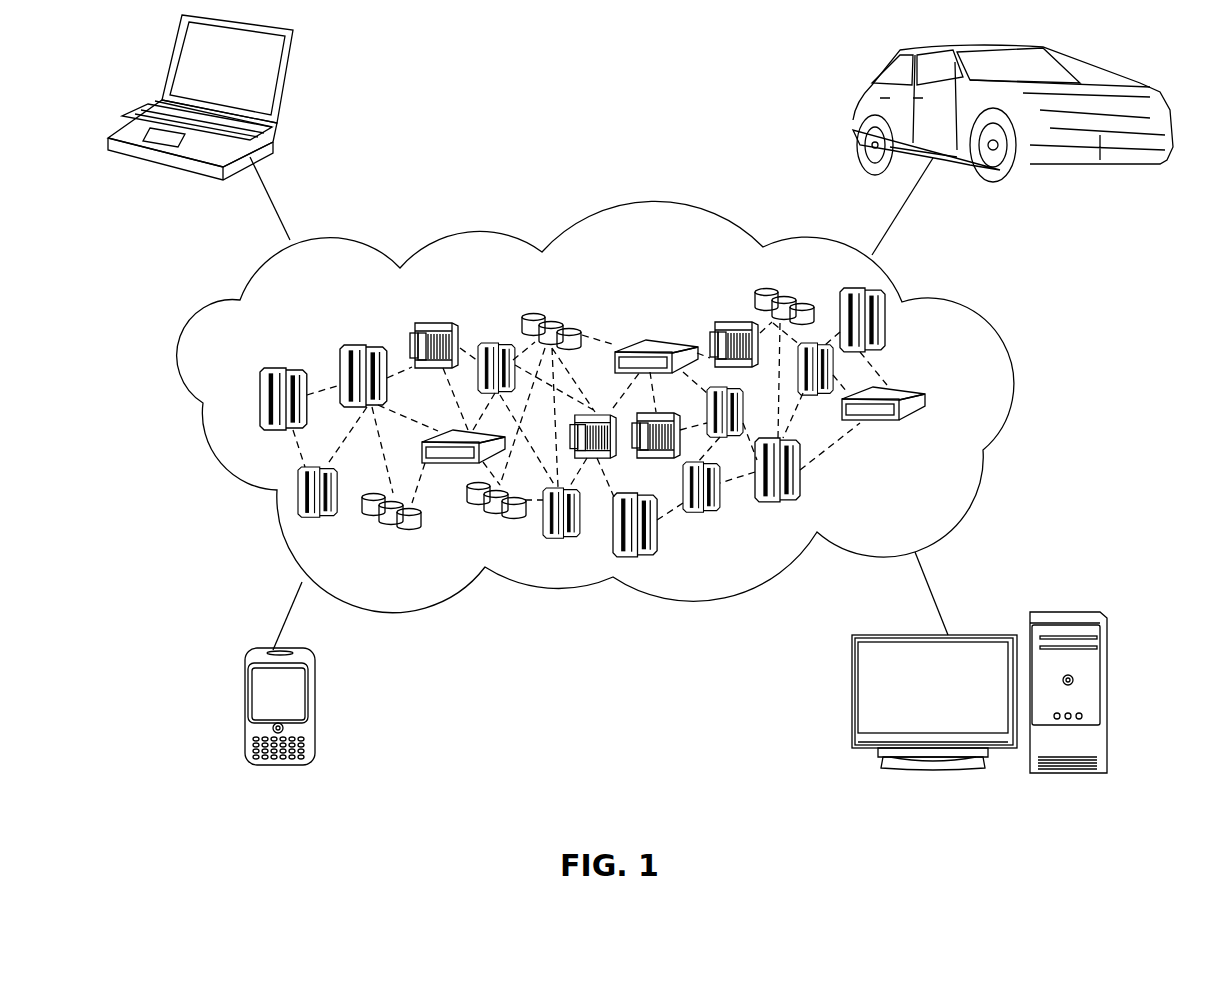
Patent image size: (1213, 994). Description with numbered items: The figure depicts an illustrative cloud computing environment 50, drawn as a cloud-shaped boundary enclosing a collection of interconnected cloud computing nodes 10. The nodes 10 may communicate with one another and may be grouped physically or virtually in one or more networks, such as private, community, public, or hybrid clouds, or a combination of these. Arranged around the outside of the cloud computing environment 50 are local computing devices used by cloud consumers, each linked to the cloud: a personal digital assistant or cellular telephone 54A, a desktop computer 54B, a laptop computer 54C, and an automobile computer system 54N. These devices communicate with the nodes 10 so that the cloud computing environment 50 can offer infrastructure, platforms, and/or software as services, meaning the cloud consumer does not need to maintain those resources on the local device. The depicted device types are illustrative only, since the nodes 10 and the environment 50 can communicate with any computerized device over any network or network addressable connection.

The cloud computing nodes 10 is at (965, 400).
The cloud computing environment 50 is at (992, 313).
The personal digital assistant (PDA) or cellular telephone 54A is at (243, 712).
The desktop computer 54B is at (1073, 612).
The laptop computer 54C is at (287, 82).
The automobile computer system 54N is at (863, 90).